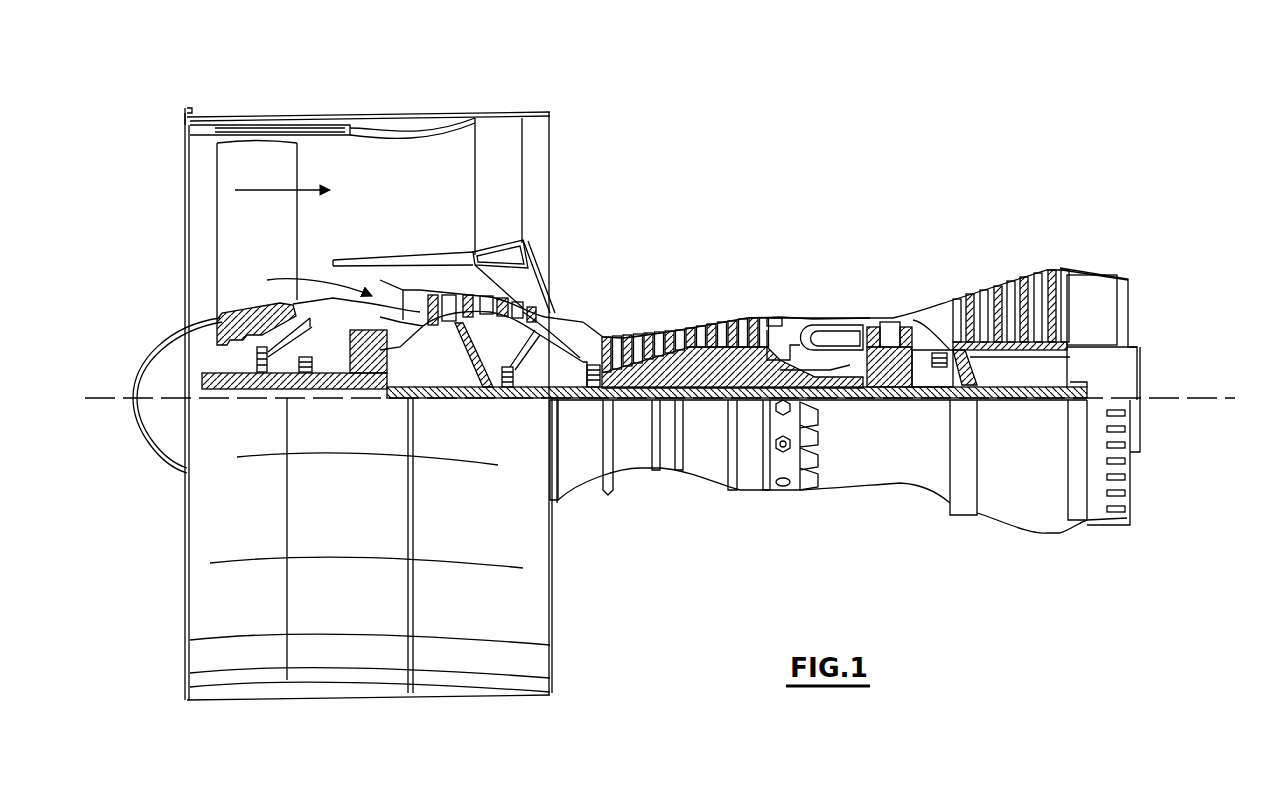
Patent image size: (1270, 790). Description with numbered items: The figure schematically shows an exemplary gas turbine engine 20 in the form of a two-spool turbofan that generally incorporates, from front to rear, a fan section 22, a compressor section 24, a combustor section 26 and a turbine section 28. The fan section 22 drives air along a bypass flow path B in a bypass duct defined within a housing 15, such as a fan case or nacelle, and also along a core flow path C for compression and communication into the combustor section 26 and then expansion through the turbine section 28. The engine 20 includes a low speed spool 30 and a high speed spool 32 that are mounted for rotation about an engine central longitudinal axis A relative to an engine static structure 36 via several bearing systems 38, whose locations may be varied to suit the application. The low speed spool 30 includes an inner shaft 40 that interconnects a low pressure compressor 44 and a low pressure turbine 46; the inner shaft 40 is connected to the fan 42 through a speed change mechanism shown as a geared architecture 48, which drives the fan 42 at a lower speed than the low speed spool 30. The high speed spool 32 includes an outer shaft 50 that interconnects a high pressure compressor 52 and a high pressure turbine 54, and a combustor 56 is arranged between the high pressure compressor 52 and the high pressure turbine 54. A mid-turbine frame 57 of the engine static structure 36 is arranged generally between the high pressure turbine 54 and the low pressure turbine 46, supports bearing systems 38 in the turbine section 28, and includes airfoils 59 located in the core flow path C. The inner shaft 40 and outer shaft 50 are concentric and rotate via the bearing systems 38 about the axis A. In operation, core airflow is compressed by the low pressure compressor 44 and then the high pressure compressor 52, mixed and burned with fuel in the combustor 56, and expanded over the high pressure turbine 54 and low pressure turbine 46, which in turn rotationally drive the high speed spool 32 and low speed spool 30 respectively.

The housing 15 is at (368, 120).
The gas turbine engine 20 is at (831, 164).
The fan section 22 is at (297, 106).
The compressor section 24 is at (601, 305).
The combustor section 26 is at (822, 293).
The turbine section 28 is at (971, 255).
The low speed spool 30 is at (707, 407).
The high speed spool 32 is at (748, 340).
The engine static structure 36 is at (748, 492).
The bearing systems 38 is at (508, 387).
The inner shaft 40 is at (572, 400).
The fan 42 is at (272, 244).
The low pressure compressor 44 is at (470, 307).
The low pressure turbine 46 is at (1015, 273).
The geared architecture 48 is at (375, 383).
The outer shaft 50 is at (823, 387).
The high pressure compressor 52 is at (692, 337).
The high pressure turbine 54 is at (888, 318).
The combustor 56 is at (823, 340).
The mid-turbine frame 57 is at (933, 304).
The airfoils 59 is at (958, 369).
The engine central longitudinal axis A is at (1222, 398).
The bypass flow path B is at (270, 190).
The core flow path C is at (312, 280).